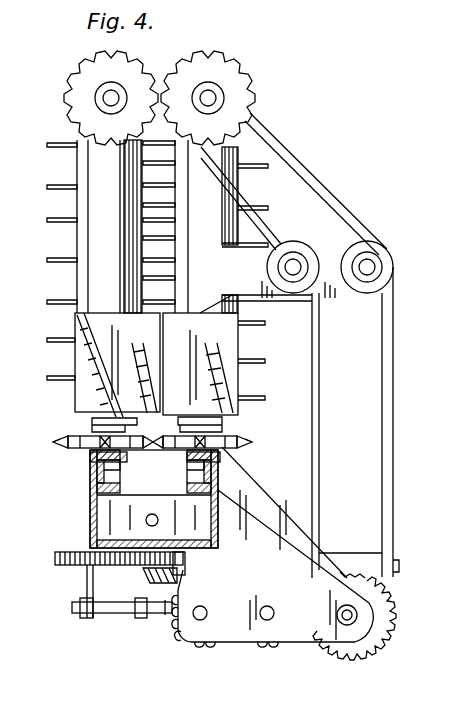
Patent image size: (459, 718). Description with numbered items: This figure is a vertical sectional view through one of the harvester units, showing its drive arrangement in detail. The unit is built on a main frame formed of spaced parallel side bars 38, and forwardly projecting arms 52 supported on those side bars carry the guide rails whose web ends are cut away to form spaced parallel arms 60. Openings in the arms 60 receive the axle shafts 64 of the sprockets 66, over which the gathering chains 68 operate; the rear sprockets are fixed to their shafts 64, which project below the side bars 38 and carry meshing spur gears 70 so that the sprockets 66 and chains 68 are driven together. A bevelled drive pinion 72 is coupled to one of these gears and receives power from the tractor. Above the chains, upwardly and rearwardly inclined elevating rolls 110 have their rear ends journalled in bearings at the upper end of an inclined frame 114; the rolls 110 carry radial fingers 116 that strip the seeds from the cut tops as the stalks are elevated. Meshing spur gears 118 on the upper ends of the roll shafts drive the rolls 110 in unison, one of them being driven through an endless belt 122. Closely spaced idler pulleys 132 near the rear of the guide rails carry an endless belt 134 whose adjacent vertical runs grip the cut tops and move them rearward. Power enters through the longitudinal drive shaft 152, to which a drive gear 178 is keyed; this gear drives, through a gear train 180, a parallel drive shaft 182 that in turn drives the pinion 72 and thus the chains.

The spur gears 118 is at (137, 77).
The frame 114 is at (95, 175).
The elevating rolls 110 is at (82, 193).
The radial fingers 116 is at (58, 258).
The endless belt 134 is at (160, 317).
The idler pulleys 132 is at (100, 327).
The arms 60 is at (68, 425).
The gathering chains 68 is at (60, 446).
The axle shafts 64 is at (93, 465).
The arms 52 is at (92, 478).
The sprockets 66 is at (185, 448).
The side bars 38 is at (90, 520).
The spur gears 70 is at (63, 567).
The bevelled drive pinion 72 is at (150, 578).
The drive shaft 182 is at (204, 619).
The drive shaft 152 is at (340, 608).
The drive gear 178 is at (383, 620).
The gear train 180 is at (268, 655).
The endless belt 122 is at (388, 375).